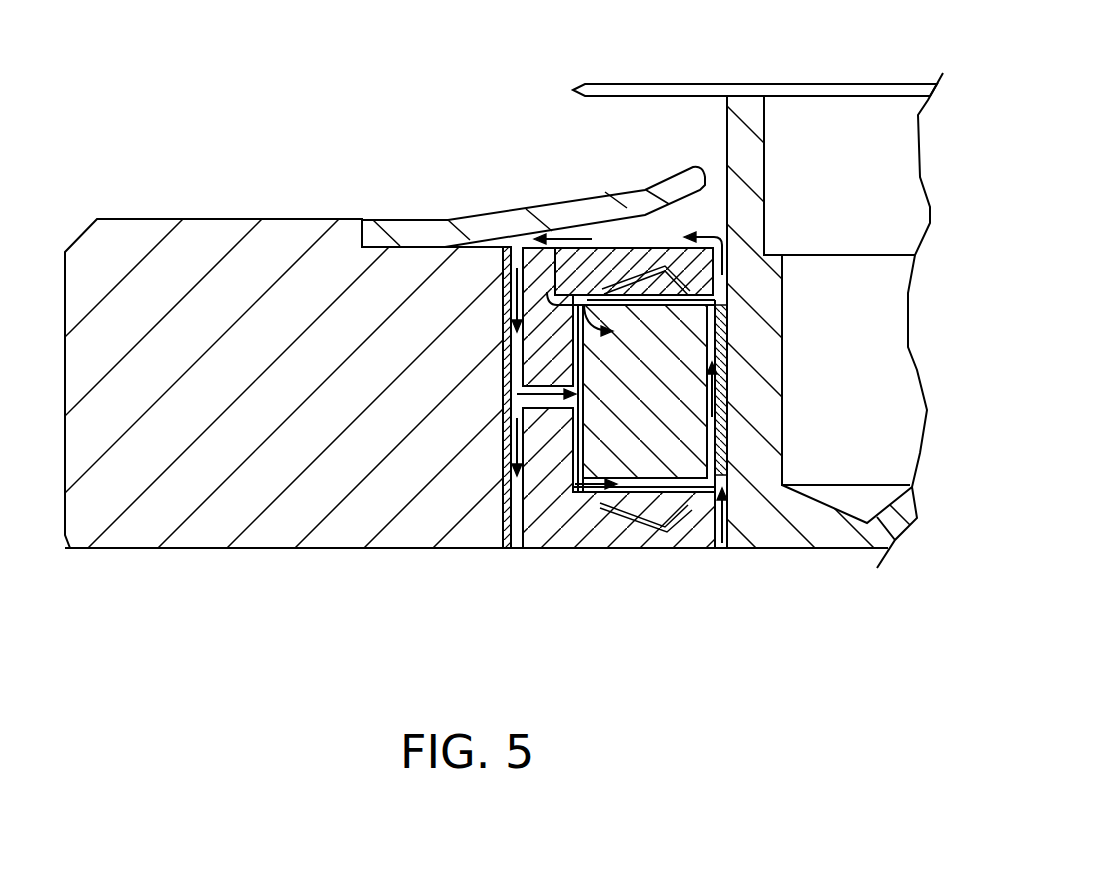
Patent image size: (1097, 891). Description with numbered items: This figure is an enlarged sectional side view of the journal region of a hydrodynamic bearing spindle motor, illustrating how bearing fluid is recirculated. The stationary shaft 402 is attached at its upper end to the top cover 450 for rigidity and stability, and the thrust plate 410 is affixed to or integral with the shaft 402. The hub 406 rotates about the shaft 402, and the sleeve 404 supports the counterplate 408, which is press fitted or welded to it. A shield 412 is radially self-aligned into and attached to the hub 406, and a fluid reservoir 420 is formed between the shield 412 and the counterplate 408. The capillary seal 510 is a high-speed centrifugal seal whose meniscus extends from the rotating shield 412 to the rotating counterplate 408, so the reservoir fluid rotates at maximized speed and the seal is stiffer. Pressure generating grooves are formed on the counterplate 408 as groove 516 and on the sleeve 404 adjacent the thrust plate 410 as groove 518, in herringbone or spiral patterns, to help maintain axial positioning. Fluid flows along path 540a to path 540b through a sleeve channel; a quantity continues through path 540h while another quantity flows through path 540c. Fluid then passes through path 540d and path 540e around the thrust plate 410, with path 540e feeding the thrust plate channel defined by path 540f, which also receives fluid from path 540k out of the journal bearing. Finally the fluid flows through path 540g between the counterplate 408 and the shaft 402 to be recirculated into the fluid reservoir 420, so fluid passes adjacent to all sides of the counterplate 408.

The shaft 402 is at (880, 443).
The sleeve 404 is at (565, 358).
The hub 406 is at (308, 382).
The counterplate 408 is at (612, 280).
The thrust plate 410 is at (666, 392).
The shield 412 is at (480, 220).
The fluid reservoir 420 is at (608, 230).
The top cover 450 is at (646, 84).
The capillary seal 510 is at (652, 248).
The groove 516 is at (708, 283).
The groove 518 is at (675, 522).
The path 540a is at (558, 233).
The path 540b is at (505, 296).
The path 540c is at (512, 385).
The path 540d is at (628, 325).
The path 540e is at (600, 484).
The path 540f is at (716, 375).
The path 540g is at (724, 228).
The path 540h is at (506, 442).
The path 540k is at (729, 504).